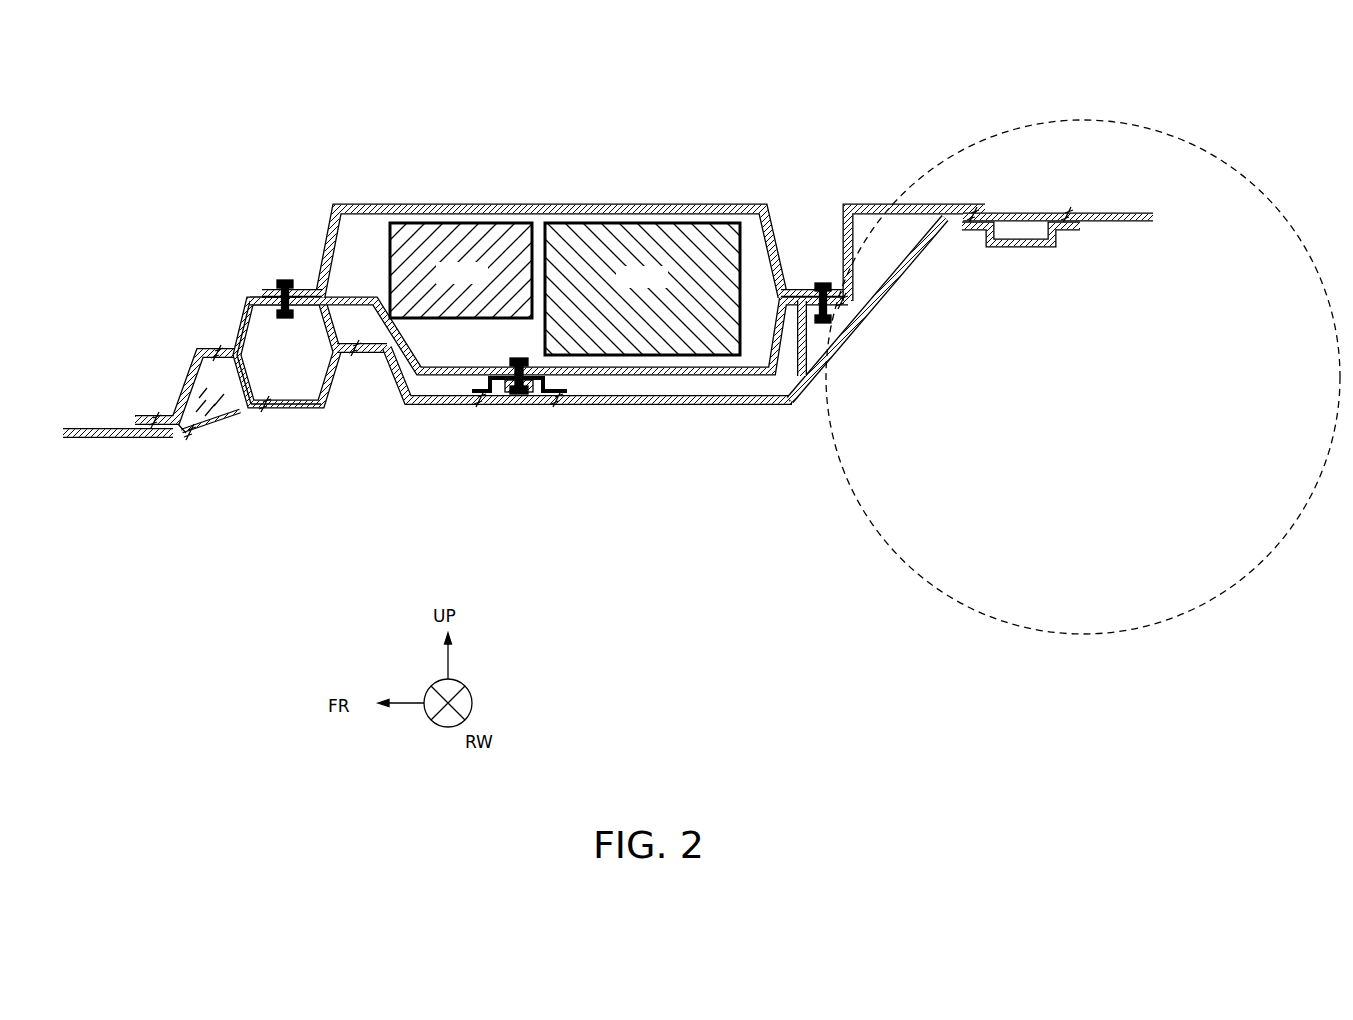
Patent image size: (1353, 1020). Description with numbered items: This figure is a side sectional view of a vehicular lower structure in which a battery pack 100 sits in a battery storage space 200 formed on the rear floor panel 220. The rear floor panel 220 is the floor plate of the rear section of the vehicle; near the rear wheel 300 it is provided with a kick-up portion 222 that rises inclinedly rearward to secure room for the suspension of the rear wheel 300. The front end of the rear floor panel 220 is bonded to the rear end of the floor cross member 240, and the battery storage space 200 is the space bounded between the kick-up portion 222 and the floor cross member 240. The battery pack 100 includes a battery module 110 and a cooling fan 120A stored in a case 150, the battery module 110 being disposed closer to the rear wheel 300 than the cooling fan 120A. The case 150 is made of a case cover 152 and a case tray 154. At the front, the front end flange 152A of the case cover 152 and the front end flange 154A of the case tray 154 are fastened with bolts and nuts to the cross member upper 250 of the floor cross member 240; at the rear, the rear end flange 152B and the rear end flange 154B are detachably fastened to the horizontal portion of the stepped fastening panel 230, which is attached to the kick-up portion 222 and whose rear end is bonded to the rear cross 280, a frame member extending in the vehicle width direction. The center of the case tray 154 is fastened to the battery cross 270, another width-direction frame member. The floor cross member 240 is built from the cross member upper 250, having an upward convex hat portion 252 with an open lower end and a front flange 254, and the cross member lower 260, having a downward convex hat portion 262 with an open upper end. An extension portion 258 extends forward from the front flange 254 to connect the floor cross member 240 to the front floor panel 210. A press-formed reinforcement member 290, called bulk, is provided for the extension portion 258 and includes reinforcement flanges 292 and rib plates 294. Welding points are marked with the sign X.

The battery pack 100 is at (719, 195).
The battery module 110 is at (612, 233).
The cooling fan 120A is at (467, 237).
The case 150 is at (700, 389).
The case cover 152 is at (368, 205).
The front end flange of the case cover 152A is at (296, 282).
The rear end flange of the case cover 152B is at (840, 290).
The case tray 154 is at (600, 377).
The front end flange of the case tray 154A is at (262, 298).
The rear end flange of the case tray 154B is at (803, 268).
The battery storage space 200 is at (693, 385).
The front floor panel 210 is at (88, 440).
The rear floor panel 220 is at (432, 405).
The kick-up portion 222 is at (876, 307).
The fastening panel 230 is at (865, 197).
The floor cross member 240 is at (308, 412).
The cross member upper 250 is at (233, 327).
The upward convex hat portion 252 is at (247, 316).
The front flange 254 is at (207, 340).
The extension portion 258 is at (188, 377).
The cross member lower 260 is at (343, 424).
The downward convex hat portion 262 is at (292, 400).
The battery cross 270 is at (500, 400).
The rear cross 280 is at (1023, 252).
The reinforcement member 290 is at (193, 432).
The reinforcement flange 292 is at (235, 405).
The rib plate 294 is at (217, 418).
The rear wheel 300 is at (1051, 119).